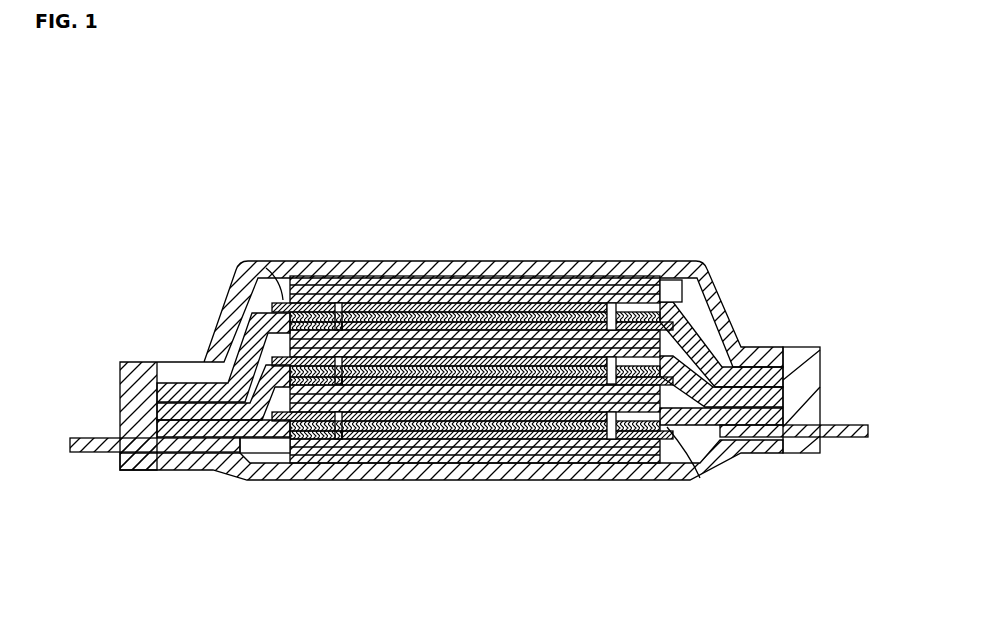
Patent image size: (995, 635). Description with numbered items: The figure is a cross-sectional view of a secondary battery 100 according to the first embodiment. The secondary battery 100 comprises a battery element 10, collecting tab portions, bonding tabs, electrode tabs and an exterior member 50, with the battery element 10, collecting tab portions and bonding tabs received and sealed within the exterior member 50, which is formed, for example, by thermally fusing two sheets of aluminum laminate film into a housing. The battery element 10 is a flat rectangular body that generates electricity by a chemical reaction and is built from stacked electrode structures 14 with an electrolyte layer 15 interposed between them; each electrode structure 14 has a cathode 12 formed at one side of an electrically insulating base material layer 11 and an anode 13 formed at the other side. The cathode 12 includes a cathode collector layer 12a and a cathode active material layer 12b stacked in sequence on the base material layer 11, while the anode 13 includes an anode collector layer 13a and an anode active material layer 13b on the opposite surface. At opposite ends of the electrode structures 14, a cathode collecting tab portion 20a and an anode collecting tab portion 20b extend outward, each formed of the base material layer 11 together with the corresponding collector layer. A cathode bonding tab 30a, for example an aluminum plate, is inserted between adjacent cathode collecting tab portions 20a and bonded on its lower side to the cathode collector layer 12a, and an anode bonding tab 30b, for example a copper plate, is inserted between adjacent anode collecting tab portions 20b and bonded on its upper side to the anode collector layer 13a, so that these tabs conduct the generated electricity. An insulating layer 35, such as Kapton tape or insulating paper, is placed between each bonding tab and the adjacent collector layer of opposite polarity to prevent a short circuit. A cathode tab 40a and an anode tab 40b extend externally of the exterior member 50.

The secondary battery 100 is at (176, 172).
The battery element 10 is at (355, 268).
The base material layer 11 is at (497, 345).
The cathode 12 is at (439, 314).
The cathode collector layer 12a is at (473, 325).
The cathode active material layer 12b is at (430, 345).
The anode 13 is at (507, 314).
The anode collector layer 13a is at (520, 318).
The anode active material layer 13b is at (557, 320).
The electrode structure 14 is at (472, 292).
The electrolyte layer 15 is at (423, 392).
The cathode collecting tab portion 20a is at (278, 449).
The anode collecting tab portion 20b is at (662, 291).
The cathode bonding tab 30a is at (241, 349).
The anode bonding tab 30b is at (712, 342).
The insulating layer 35 is at (272, 284).
The cathode tab 40a is at (104, 449).
The anode tab 40b is at (846, 434).
The exterior member 50 is at (813, 374).